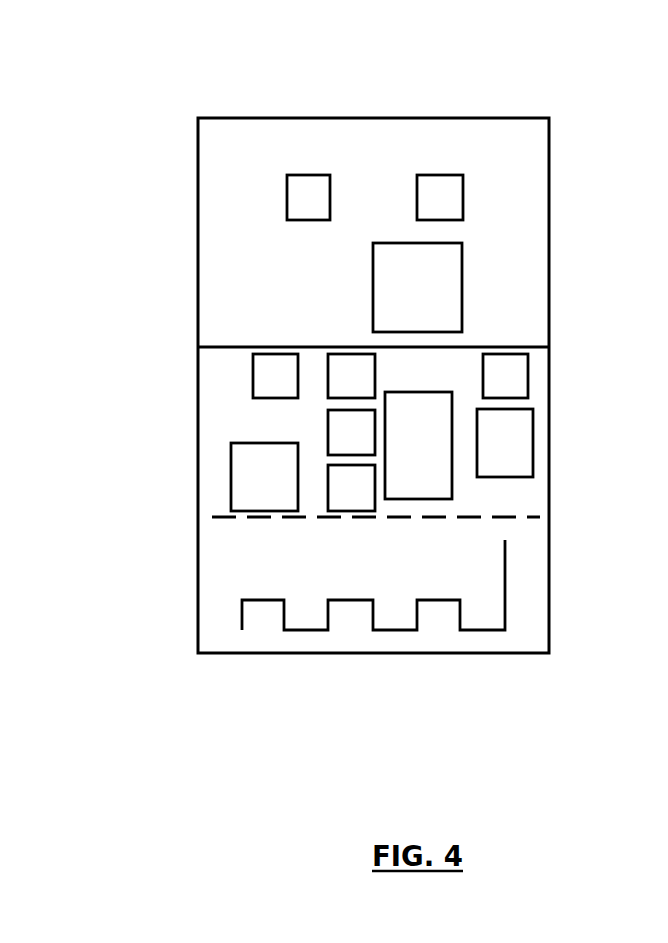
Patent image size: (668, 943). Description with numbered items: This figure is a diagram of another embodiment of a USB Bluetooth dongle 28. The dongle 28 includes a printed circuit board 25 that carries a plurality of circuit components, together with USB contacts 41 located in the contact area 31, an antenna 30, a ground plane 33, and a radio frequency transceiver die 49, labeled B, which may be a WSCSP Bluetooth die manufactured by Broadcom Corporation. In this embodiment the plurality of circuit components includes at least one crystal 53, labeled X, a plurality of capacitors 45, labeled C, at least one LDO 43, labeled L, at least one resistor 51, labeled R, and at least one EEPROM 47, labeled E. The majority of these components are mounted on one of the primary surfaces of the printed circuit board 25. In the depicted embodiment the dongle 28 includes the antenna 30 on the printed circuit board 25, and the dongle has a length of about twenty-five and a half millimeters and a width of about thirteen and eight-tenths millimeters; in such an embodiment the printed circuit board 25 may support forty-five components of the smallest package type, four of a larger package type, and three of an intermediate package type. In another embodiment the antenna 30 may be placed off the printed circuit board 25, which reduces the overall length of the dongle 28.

The USB Bluetooth dongle 28 is at (152, 64).
The printed circuit board 25 is at (198, 653).
The contact area 31 is at (386, 118).
The USB contacts 41 is at (287, 175).
The radio frequency transceiver die 49 is at (462, 288).
The capacitors 45 is at (253, 373).
The LDO 43 is at (231, 498).
The EEPROM 47 is at (452, 499).
The resistor 51 is at (528, 375).
The crystal 53 is at (533, 443).
The ground plane 33 is at (550, 616).
The antenna 30 is at (242, 600).